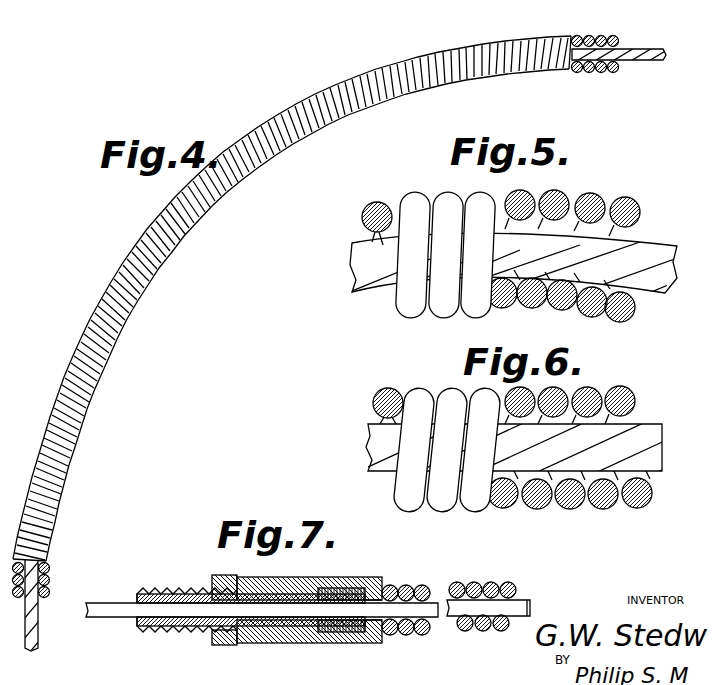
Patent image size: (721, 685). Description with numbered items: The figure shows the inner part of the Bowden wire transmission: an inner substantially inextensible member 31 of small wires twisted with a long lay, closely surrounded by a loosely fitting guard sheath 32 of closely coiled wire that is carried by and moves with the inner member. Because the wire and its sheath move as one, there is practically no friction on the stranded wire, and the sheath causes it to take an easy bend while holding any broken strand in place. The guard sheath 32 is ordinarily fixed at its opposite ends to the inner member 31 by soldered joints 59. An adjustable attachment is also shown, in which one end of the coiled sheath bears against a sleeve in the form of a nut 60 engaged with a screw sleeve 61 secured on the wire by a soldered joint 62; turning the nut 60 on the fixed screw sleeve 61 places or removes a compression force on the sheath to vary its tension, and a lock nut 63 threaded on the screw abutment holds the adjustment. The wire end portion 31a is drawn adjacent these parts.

In FIG. 4, the inner substantially inextensible member 31 is at (650, 60).
In FIG. 5, the inner substantially inextensible member 31 is at (662, 270).
In FIG. 6, the inner substantially inextensible member 31 is at (657, 450).
In FIG. 7, the cable end portion 31a is at (531, 604).
In FIG. 4, the guard sheath 32 is at (426, 62).
In FIG. 5, the guard sheath 32 is at (440, 197).
In FIG. 6, the guard sheath 32 is at (456, 395).
In FIG. 7, the guard sheath 32 is at (480, 584).
In FIG. 4, the soldered joints 59 is at (619, 47).
In FIG. 7, the soldered joints 59 is at (512, 594).
In FIG. 7, the nut 60 is at (368, 579).
In FIG. 7, the screw sleeve 61 is at (181, 633).
In FIG. 7, the soldered joint 62 is at (139, 620).
In FIG. 7, the lock nut 63 is at (232, 646).